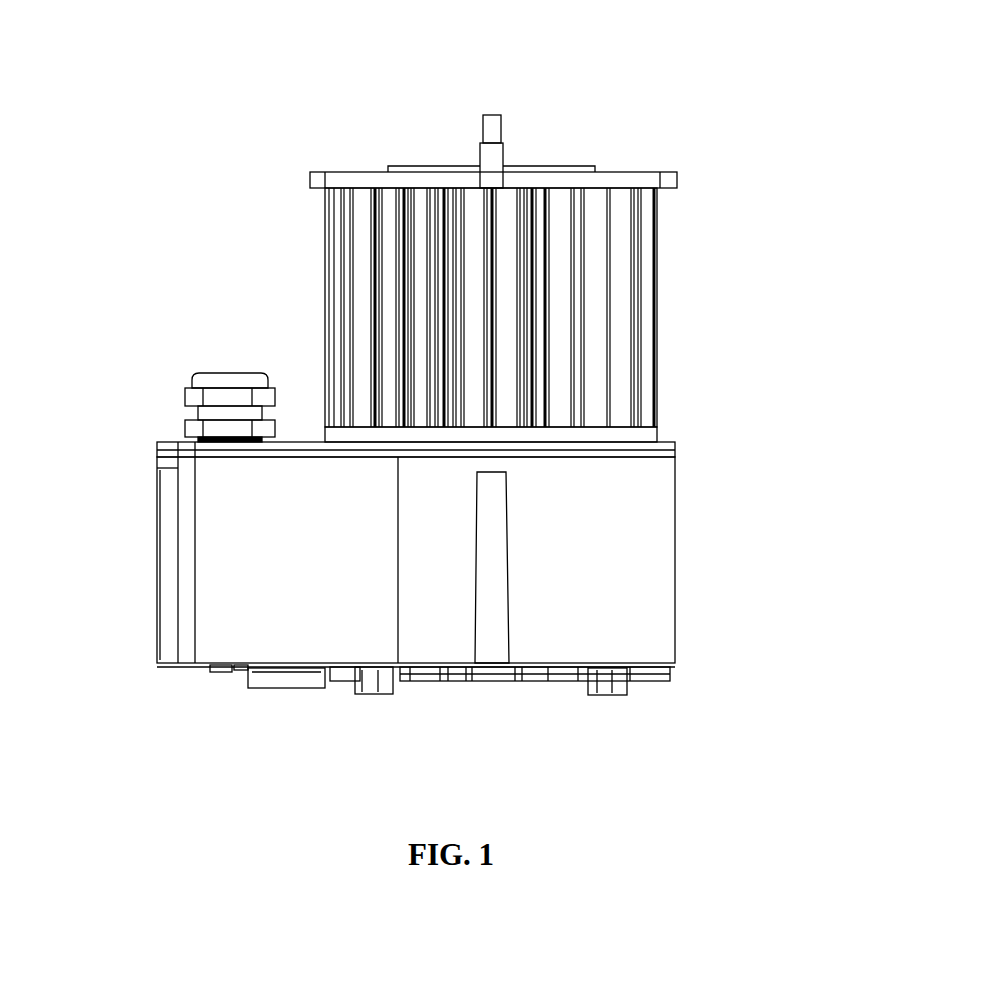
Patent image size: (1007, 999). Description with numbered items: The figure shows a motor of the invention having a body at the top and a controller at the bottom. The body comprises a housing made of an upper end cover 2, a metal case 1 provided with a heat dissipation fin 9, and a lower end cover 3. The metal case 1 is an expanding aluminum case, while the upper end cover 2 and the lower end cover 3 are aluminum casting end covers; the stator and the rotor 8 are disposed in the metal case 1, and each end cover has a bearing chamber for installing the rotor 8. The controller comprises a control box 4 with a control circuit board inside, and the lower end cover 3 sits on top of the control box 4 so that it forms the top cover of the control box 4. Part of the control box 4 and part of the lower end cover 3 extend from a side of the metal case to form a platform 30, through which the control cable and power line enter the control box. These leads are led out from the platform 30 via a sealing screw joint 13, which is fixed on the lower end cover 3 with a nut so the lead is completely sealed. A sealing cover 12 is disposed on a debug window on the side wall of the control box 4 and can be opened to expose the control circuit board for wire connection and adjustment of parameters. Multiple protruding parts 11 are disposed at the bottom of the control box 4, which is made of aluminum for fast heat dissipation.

The metal case 1 is at (635, 320).
The upper end cover 2 is at (665, 176).
The lower end cover 3 is at (660, 440).
The control box 4 is at (600, 562).
The rotor 8 is at (497, 123).
The heat dissipation fin 9 is at (370, 300).
The protruding parts 11 is at (578, 672).
The sealing cover 12 is at (160, 530).
The sealing screw joint 13 is at (235, 395).
The platform 30 is at (303, 440).